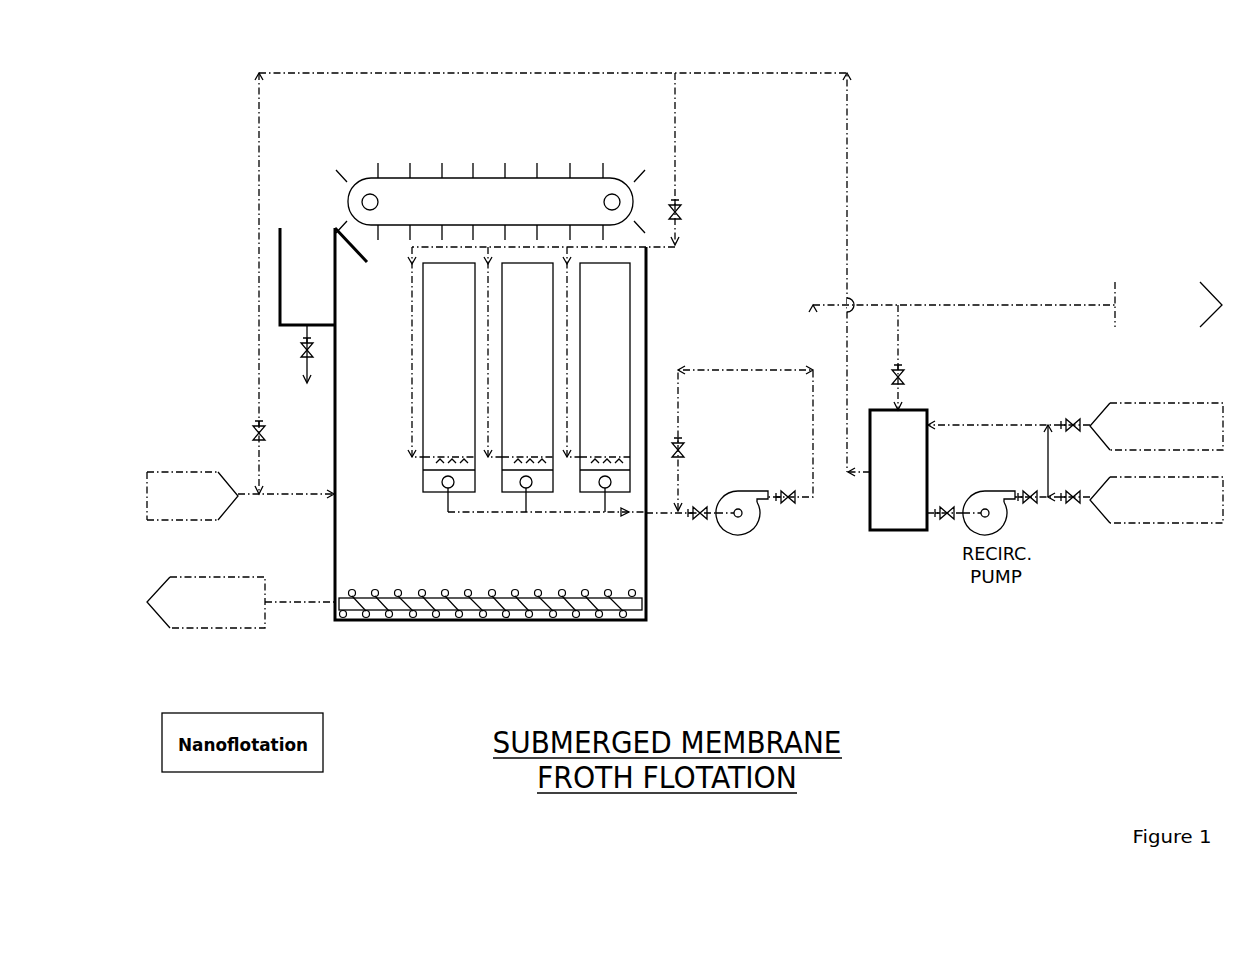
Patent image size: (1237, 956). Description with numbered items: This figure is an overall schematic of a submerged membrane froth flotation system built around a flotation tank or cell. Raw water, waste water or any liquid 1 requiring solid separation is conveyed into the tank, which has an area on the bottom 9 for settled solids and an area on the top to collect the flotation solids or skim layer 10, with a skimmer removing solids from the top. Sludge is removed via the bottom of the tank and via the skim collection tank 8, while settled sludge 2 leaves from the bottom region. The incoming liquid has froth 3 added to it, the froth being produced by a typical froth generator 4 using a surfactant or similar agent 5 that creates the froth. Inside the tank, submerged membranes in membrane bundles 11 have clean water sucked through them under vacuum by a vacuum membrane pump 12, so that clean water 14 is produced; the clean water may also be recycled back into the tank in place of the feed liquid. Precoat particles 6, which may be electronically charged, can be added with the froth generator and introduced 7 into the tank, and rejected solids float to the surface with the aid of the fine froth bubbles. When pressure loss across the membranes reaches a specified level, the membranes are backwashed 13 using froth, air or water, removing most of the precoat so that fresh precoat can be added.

The raw water or waste water or liquid requiring solid separation 1 is at (241, 472).
The settled sludge outlet 2 is at (241, 624).
The froth 3 is at (533, 271).
The froth generator 4 is at (904, 443).
The surfactant or similar agent 5 is at (1119, 497).
The precoat particles 6 is at (1075, 405).
The introduction of precoat into the flotation tank/cell 7 is at (564, 265).
The skim collection tank 8 is at (290, 392).
The area on the bottom for settled solids 9 is at (490, 628).
The area on the top to collect flotation solids or skim layer or float layer 10 is at (490, 175).
The submerged membranes in membrane bundles 11 is at (507, 425).
The vacuum membrane pump 12 is at (712, 515).
The backwash 13 is at (744, 408).
The clean water 14 is at (1017, 281).